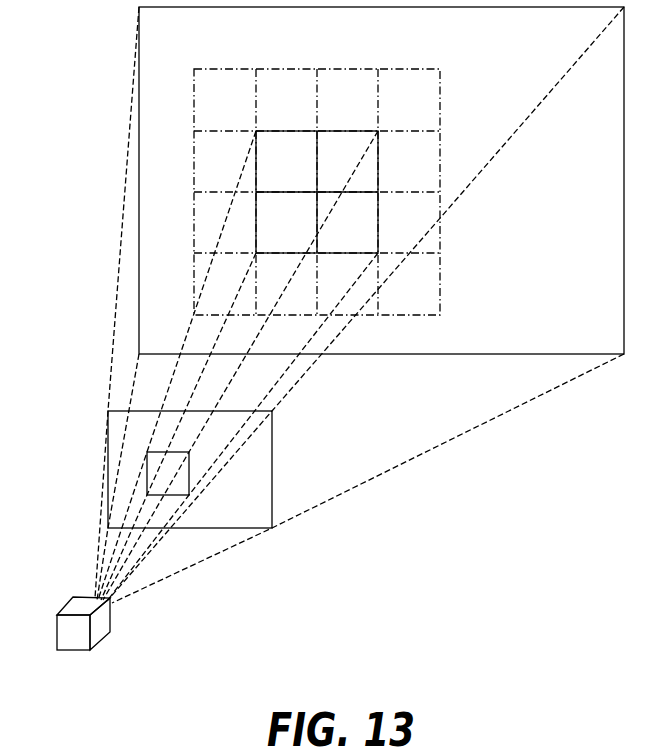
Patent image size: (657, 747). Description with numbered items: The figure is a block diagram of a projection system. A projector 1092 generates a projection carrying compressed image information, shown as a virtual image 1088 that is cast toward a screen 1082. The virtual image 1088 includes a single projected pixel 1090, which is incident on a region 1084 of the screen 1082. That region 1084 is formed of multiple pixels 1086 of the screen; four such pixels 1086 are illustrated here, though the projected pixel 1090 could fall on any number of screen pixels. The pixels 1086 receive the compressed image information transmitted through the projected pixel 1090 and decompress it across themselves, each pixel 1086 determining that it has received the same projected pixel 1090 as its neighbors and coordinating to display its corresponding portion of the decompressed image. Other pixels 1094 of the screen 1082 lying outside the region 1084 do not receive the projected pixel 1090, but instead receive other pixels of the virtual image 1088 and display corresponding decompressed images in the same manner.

The screen 1082 is at (138, 82).
The region 1084 is at (287, 130).
The pixels 1086 is at (317, 192).
The virtual image 1088 is at (272, 483).
The pixel 1090 is at (173, 477).
The projector 1092 is at (103, 628).
The other pixels 1094 is at (428, 111).